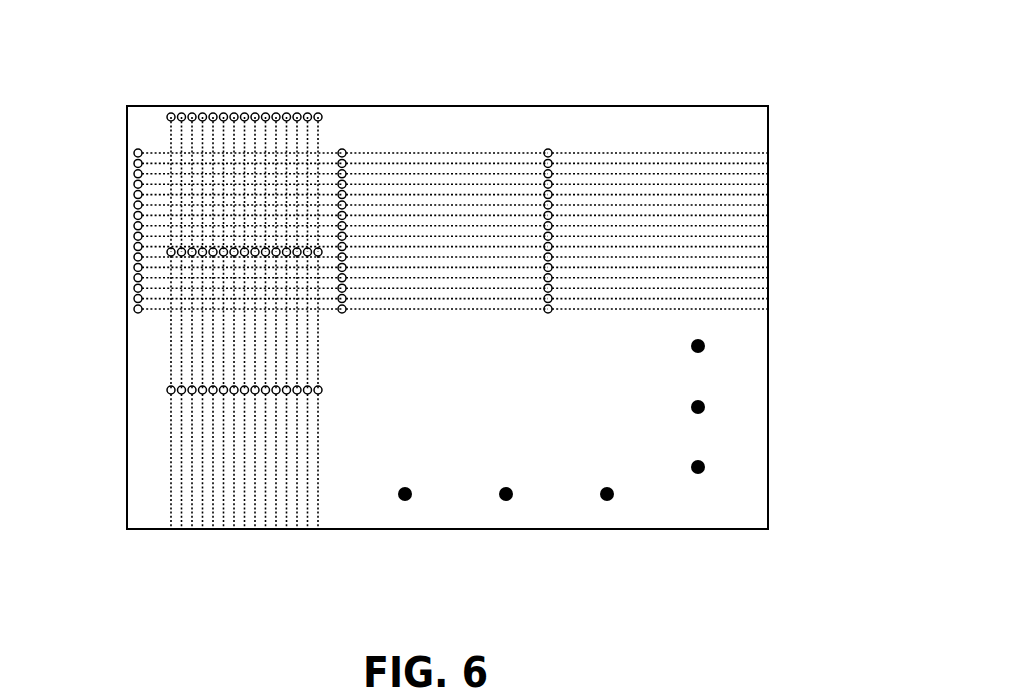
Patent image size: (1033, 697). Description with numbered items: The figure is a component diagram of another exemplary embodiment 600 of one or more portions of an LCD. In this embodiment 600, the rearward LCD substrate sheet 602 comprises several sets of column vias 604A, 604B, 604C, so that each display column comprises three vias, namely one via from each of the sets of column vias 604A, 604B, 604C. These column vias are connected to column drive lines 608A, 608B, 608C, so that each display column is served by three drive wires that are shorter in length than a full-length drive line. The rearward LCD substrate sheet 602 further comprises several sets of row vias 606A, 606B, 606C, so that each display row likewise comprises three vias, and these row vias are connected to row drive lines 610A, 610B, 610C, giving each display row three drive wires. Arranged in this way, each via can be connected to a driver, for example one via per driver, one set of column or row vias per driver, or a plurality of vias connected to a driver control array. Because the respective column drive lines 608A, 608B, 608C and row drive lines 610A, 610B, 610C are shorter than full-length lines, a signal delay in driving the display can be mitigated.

The exemplary embodiment of one or more portions of an LCD 600 is at (789, 42).
The rearward LCD substrate sheet 602 is at (568, 106).
The column vias 604A is at (167, 114).
The column vias 604B is at (170, 256).
The column vias 604C is at (169, 387).
The row vias 606A is at (135, 149).
The row vias 606B is at (346, 150).
The row vias 606C is at (552, 150).
The column drive lines 608A is at (162, 212).
The column drive lines 608B is at (330, 359).
The column drive lines 608C is at (330, 427).
The row drive lines 610A is at (325, 143).
The row drive lines 610B is at (488, 143).
The row drive lines 610C is at (678, 143).